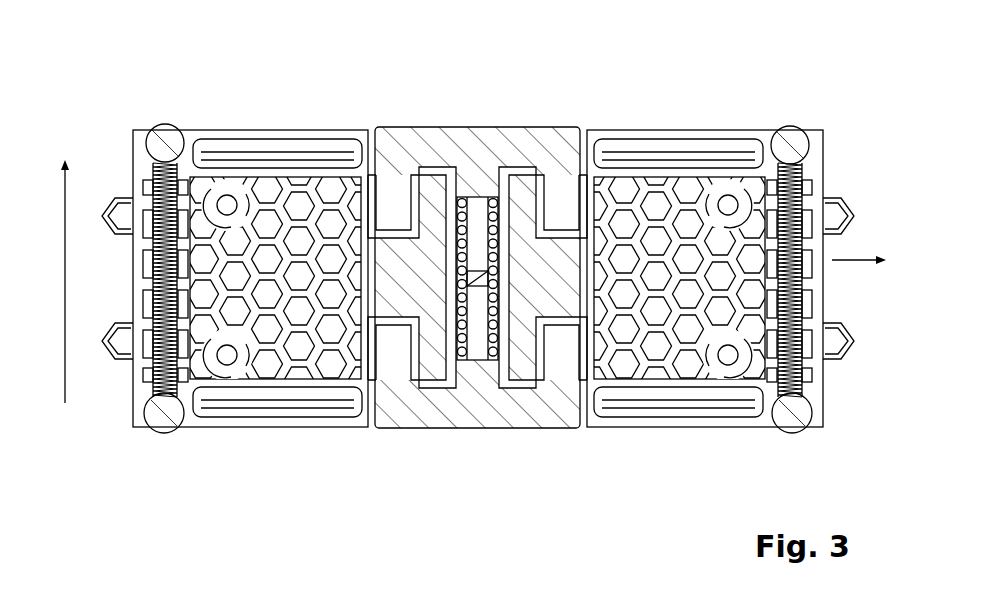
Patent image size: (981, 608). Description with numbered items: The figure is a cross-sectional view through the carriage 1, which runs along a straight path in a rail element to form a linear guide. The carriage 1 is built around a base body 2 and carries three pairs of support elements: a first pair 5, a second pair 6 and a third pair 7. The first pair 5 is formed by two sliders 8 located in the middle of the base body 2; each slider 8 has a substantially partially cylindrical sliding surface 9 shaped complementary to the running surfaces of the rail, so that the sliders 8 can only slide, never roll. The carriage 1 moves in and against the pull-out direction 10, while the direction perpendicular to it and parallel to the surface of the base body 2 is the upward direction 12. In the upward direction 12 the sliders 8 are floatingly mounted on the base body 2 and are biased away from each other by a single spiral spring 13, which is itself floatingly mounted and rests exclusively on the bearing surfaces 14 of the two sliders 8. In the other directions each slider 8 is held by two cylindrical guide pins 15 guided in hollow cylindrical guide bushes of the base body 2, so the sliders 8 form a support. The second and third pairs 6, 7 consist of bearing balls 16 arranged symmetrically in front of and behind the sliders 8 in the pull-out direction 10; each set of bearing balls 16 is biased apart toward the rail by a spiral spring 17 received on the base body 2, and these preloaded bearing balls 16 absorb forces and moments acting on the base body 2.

The carriage 1 is at (658, 105).
The base body 2 is at (292, 175).
The first pair of support elements 5 is at (440, 95).
The second pair of support elements 6 is at (153, 430).
The third pair of support elements 7 is at (757, 430).
The slider 8 is at (494, 150).
The sliding surface 9 is at (397, 127).
The pull-out direction 10 is at (840, 263).
The upward direction 12 is at (63, 290).
The spiral spring 13 is at (462, 272).
The bearing surface 14 is at (470, 198).
The cylindrical guide pin 15 is at (400, 197).
The bearing ball 16 is at (155, 138).
The spiral spring 17 is at (143, 183).